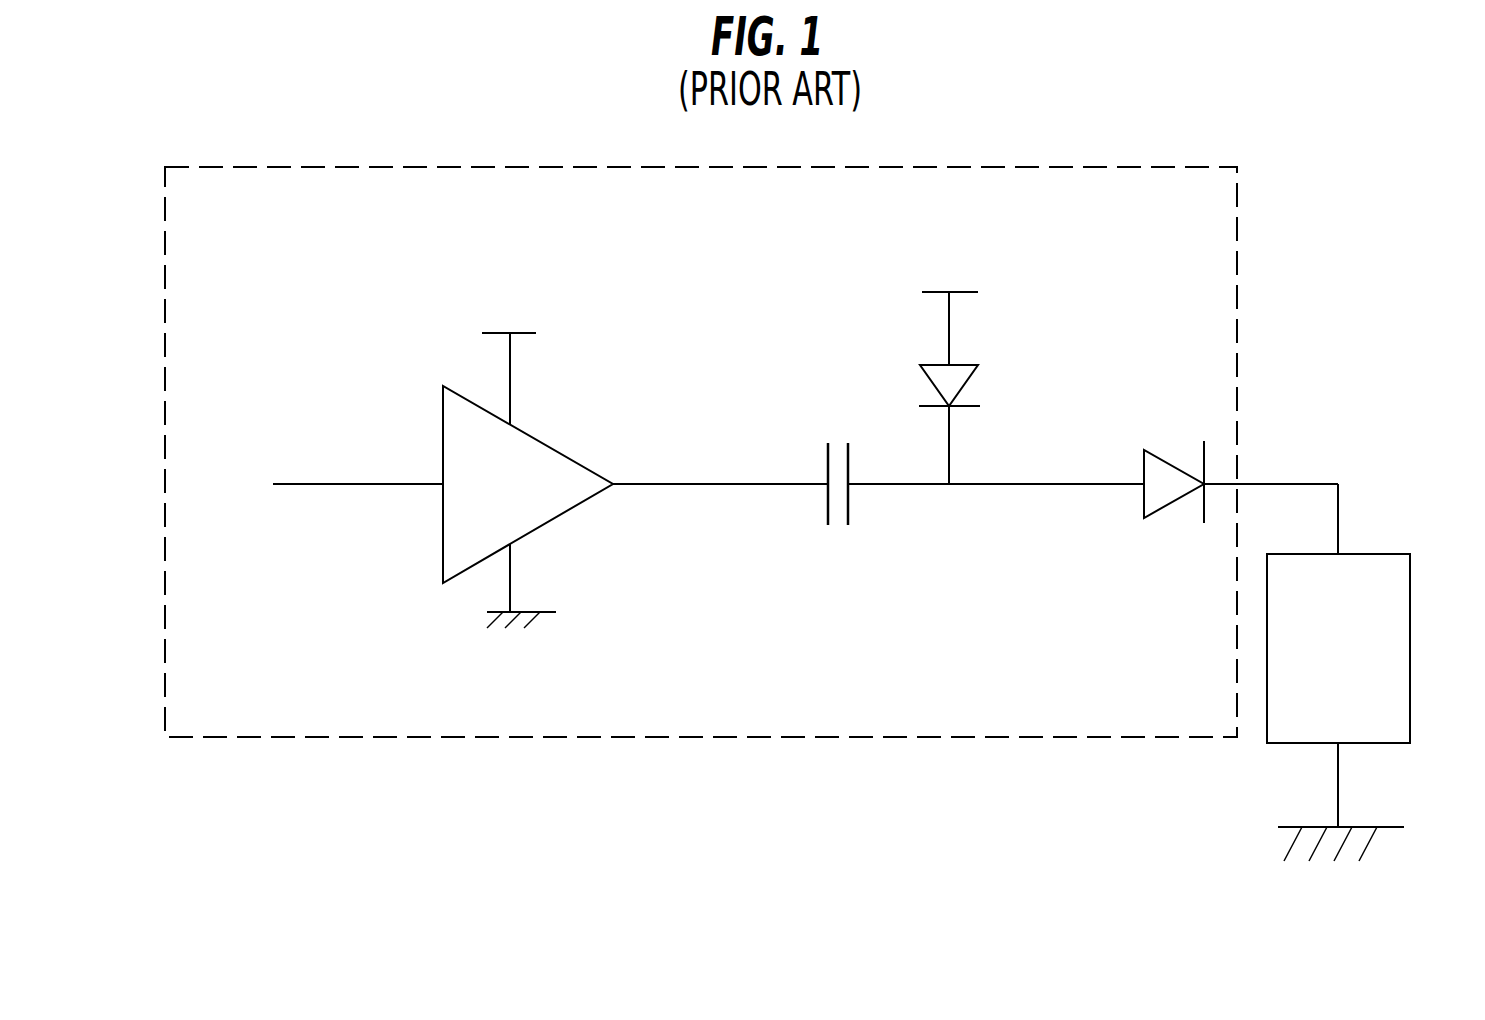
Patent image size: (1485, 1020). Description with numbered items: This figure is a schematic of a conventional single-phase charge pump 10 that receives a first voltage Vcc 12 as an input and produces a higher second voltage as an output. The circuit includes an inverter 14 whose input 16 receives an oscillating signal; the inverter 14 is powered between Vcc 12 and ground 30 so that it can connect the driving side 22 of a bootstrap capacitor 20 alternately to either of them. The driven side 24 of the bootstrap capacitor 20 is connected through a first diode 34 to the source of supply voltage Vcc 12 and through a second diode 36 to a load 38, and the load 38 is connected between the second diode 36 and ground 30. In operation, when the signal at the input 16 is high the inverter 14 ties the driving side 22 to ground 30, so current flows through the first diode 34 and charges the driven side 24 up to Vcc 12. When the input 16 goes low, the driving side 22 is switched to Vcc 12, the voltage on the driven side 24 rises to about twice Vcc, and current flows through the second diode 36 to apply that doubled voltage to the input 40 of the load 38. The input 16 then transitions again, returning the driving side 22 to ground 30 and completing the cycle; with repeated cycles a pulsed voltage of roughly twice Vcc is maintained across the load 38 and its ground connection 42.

The single-phase charge pump 10 is at (1085, 152).
The first voltage Vcc 12 is at (538, 319).
The inverter 14 is at (565, 446).
The input 16 is at (445, 489).
The bootstrap capacitor 20 is at (856, 450).
The driving side 22 is at (826, 478).
The driven side 24 is at (850, 495).
The ground 30 is at (545, 611).
The first diode 34 is at (968, 378).
The second diode 36 is at (1150, 510).
The load 38 is at (1411, 636).
The input of the load 40 is at (1340, 527).
The load ground node 42 is at (1340, 747).